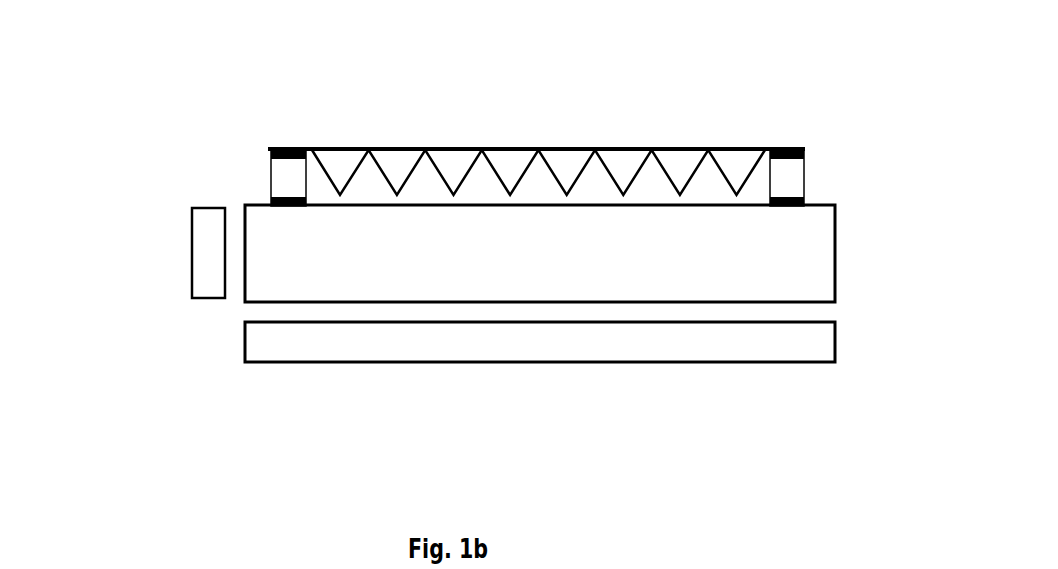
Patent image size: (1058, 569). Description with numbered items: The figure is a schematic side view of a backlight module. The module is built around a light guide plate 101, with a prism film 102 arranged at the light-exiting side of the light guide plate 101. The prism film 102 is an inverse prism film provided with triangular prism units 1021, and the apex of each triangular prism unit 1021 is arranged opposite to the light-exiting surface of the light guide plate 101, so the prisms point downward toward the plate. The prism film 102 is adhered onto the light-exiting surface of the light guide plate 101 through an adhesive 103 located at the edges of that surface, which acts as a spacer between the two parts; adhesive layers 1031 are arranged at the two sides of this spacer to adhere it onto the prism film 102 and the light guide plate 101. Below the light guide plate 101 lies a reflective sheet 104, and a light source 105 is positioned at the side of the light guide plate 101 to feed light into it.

The light guide plate 101 is at (278, 277).
The prism film 102 is at (340, 148).
The triangular prism unit 1021 is at (562, 170).
The adhesive 103 is at (790, 180).
The adhesive layer 1031 is at (785, 150).
The reflective sheet 104 is at (485, 343).
The light source 105 is at (205, 250).